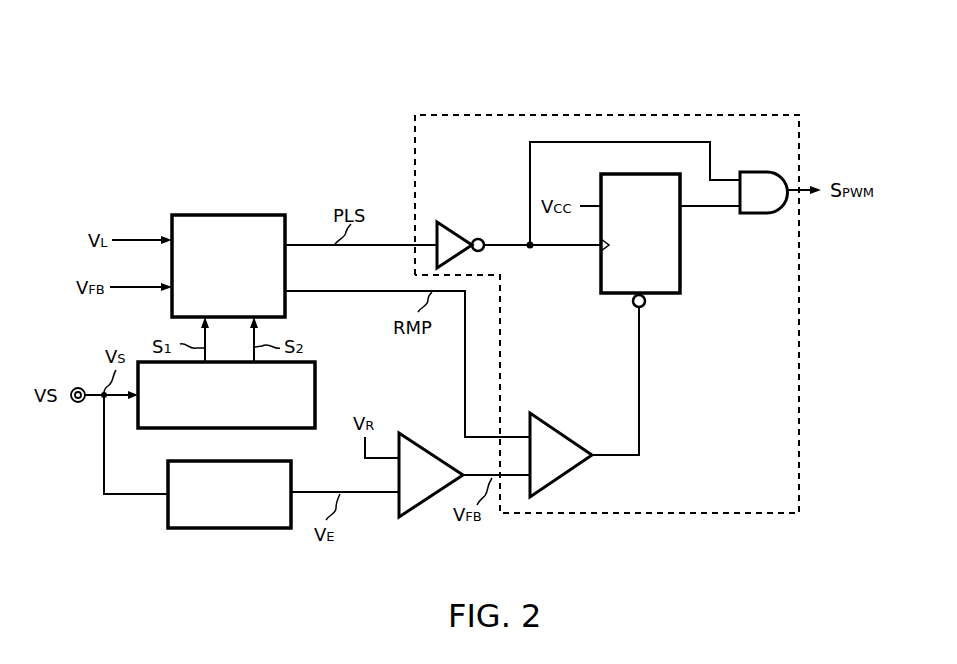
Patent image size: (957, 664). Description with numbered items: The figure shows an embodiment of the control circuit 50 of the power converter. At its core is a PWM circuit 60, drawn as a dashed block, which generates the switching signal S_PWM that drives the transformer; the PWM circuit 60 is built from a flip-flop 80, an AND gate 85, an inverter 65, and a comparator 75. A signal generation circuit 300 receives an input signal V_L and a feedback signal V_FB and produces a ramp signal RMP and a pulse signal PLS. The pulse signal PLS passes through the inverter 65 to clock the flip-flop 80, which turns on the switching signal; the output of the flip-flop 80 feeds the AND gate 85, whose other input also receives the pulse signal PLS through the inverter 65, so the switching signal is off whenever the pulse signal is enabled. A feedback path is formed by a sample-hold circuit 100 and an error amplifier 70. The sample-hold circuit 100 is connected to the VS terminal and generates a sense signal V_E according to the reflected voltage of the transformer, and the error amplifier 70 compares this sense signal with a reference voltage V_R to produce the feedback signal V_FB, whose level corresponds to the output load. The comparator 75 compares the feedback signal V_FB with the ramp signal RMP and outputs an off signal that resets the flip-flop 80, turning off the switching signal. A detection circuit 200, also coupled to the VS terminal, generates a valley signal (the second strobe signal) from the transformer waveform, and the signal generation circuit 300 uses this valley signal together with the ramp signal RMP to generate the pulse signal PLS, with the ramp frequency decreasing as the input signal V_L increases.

The control circuit 50 is at (863, 81).
The PWM circuit 60 is at (798, 515).
The inverter 65 is at (460, 237).
The error amplifier 70 is at (431, 471).
The comparator 75 is at (561, 451).
The flip-flop 80 is at (640, 228).
The AND gate 85 is at (763, 181).
The sample-hold circuit 100 is at (168, 530).
The detection circuit 200 is at (138, 430).
The signal generation circuit 300 is at (228, 253).